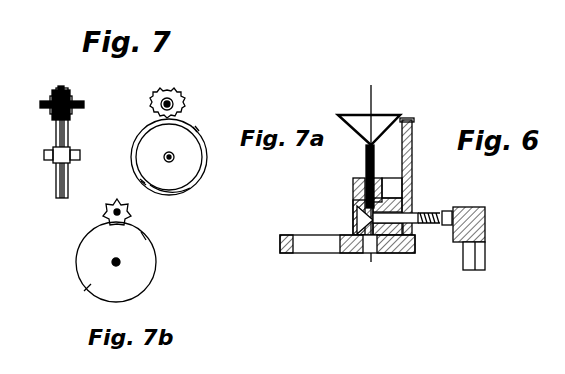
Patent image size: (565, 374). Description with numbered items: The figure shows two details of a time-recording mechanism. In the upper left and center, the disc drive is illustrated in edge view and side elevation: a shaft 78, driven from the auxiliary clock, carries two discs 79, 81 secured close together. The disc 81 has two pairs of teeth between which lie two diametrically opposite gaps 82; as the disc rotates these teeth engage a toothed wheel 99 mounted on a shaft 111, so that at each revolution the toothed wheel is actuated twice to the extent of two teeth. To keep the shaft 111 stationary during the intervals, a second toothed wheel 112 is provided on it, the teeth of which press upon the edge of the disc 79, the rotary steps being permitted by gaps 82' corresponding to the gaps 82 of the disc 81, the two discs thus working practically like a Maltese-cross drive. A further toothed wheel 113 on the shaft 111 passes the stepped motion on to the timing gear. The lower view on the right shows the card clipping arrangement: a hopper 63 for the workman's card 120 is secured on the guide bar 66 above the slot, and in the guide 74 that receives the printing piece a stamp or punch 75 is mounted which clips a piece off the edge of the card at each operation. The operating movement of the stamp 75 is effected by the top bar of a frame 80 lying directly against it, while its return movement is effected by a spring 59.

In FIG. 6, the spring 59 is at (418, 213).
In FIG. 6, the hopper 63 is at (385, 116).
In FIG. 6, the guide bar 66 is at (375, 142).
In FIG. 6, the guide 74 is at (412, 181).
In FIG. 6, the stamp or punch 75 is at (434, 226).
In FIG. 7, the shaft 78 is at (75, 153).
In FIG. 7A, the shaft 78 is at (168, 155).
In FIG. 7B, the shaft 78 is at (118, 264).
In FIG. 7, the disc 79 is at (58, 176).
In FIG. 7A, the disc 79 is at (206, 173).
In FIG. 7B, the disc 79 is at (78, 252).
In FIG. 6, the frame 80 is at (486, 221).
In FIG. 7, the disc 81 is at (66, 176).
In FIG. 7A, the disc 81 is at (179, 181).
In FIG. 7A, the gaps 82 is at (179, 162).
In FIG. 7B, the gaps 82' is at (119, 270).
In FIG. 7, the toothed wheel 99 is at (68, 98).
In FIG. 7A, the toothed wheel 99 is at (173, 95).
In FIG. 7, the shaft 111 is at (82, 104).
In FIG. 7, the second toothed wheel 112 is at (61, 88).
In FIG. 7B, the second toothed wheel 112 is at (104, 213).
In FIG. 7, the toothed wheel 113 is at (52, 97).
In FIG. 6, the workman's card 120 is at (370, 97).